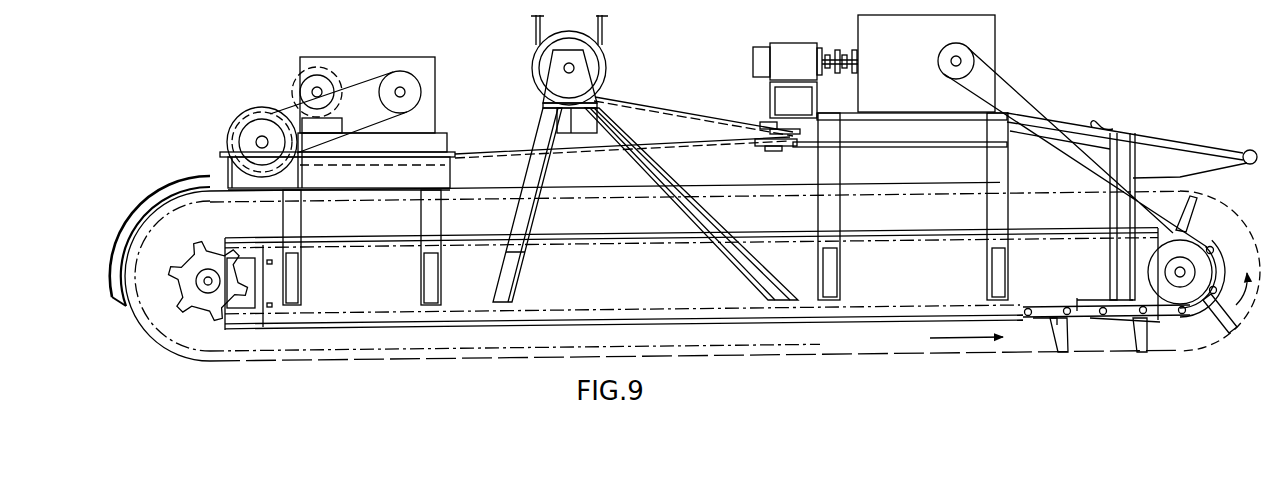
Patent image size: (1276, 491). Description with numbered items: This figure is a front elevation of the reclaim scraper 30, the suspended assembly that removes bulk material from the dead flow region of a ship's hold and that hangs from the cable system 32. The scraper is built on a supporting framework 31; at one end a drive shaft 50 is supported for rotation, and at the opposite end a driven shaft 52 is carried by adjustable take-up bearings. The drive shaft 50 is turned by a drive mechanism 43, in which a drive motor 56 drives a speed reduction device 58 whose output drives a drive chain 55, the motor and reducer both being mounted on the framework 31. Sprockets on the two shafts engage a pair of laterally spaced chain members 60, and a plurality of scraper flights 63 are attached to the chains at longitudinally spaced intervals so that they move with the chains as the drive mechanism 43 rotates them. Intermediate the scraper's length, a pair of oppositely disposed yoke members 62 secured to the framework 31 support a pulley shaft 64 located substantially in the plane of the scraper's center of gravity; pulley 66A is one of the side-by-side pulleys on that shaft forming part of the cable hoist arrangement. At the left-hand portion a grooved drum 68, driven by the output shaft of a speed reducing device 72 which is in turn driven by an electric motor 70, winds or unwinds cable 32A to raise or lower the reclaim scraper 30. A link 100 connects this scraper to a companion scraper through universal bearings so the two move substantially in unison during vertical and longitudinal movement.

The reclaim scraper 30 is at (658, 287).
The supporting framework 31 is at (833, 218).
The cable system 32 is at (606, 35).
The cable 32A is at (707, 117).
The drive mechanism 43 is at (920, 95).
The drive shaft 50 is at (1195, 272).
The driven shaft 52 is at (203, 281).
The drive chain 55 is at (1022, 90).
The drive motor 56 is at (785, 52).
The speed reduction device 58 is at (987, 32).
The chain members 60 is at (1098, 322).
The yoke members 62 is at (521, 182).
The scraper flights 63 is at (1152, 337).
The pulley shaft 64 is at (574, 68).
The pulley 66A is at (550, 68).
The grooved drum 68 is at (237, 123).
The electric motor 70 is at (300, 88).
The speed reducing device 72 is at (412, 54).
The link 100 is at (1147, 130).